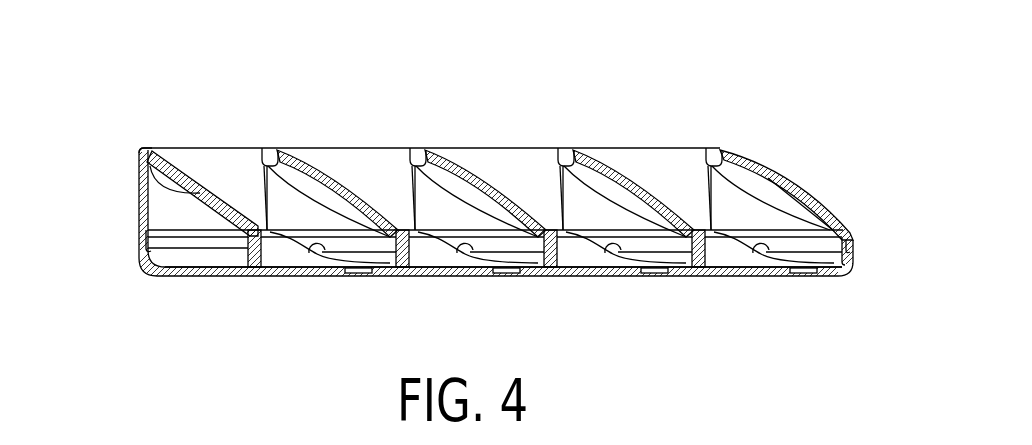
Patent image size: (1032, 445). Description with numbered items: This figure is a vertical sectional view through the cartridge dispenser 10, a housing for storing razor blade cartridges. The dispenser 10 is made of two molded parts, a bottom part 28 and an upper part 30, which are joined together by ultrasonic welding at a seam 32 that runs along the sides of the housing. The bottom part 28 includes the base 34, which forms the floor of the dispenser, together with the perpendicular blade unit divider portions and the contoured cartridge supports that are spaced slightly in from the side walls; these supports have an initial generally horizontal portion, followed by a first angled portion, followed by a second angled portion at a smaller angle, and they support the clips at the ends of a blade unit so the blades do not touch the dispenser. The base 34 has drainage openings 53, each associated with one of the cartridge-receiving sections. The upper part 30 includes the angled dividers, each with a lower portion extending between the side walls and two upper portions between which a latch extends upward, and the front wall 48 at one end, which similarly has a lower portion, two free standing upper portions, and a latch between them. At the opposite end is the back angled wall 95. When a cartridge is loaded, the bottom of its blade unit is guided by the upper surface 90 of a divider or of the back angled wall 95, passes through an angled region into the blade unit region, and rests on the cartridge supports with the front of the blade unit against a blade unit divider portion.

The cartridge dispenser 10 is at (812, 123).
The bottom part 28 is at (141, 262).
The upper part 30 is at (139, 200).
The seam 32 is at (138, 233).
The base 34 is at (194, 272).
The front wall 48 is at (797, 185).
The drainage opening 53 is at (802, 280).
The upper surface 90 is at (202, 190).
The back angled wall 95 is at (148, 153).